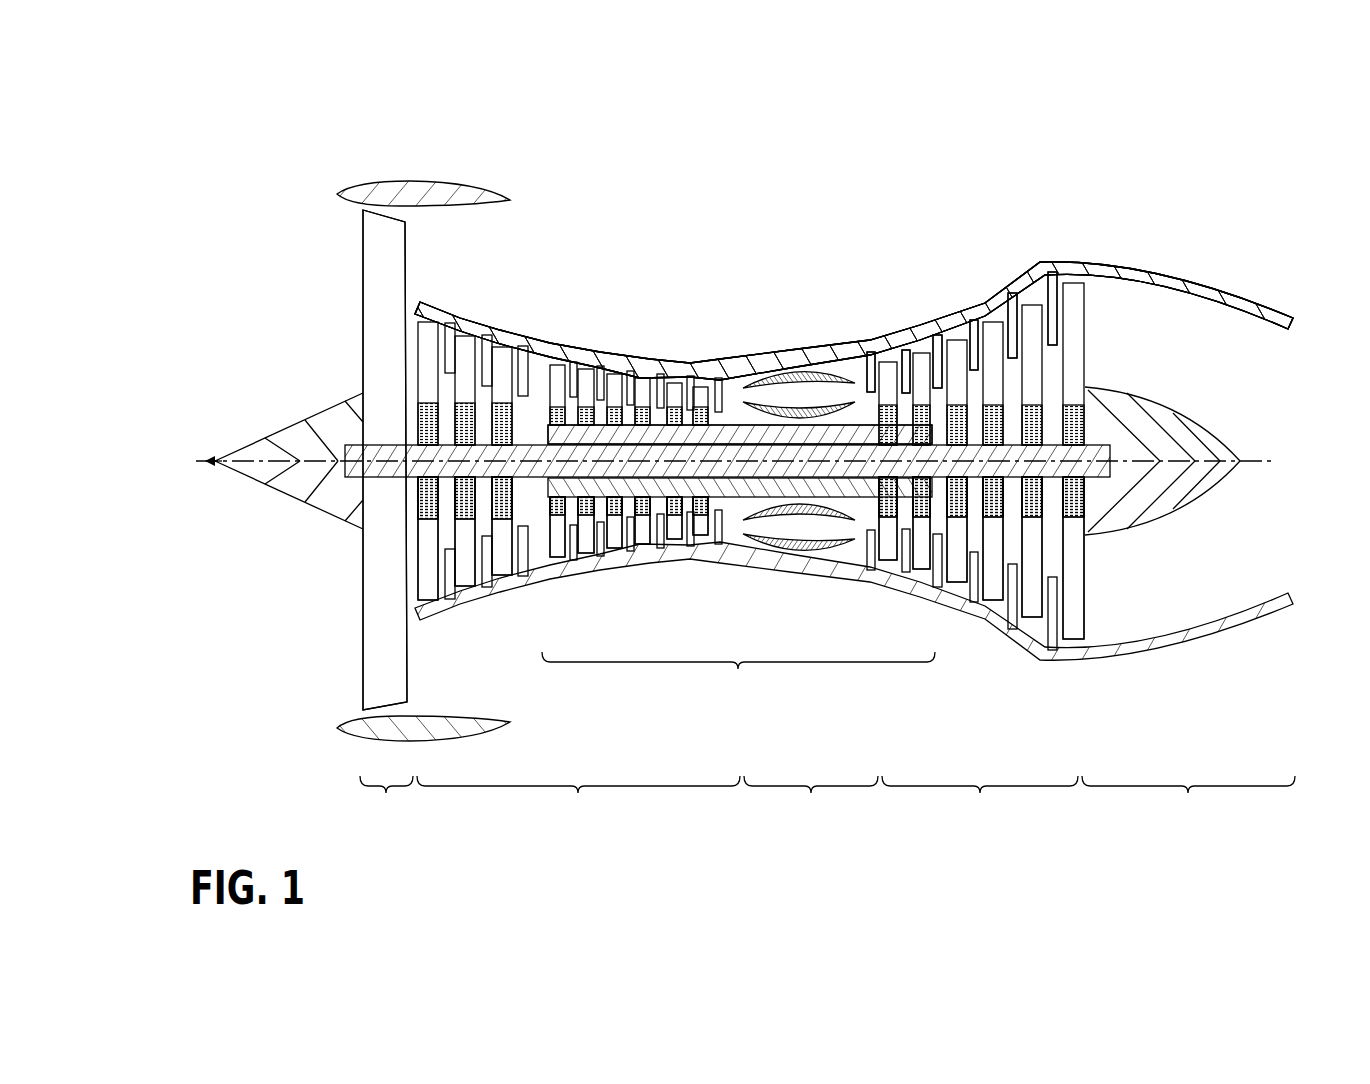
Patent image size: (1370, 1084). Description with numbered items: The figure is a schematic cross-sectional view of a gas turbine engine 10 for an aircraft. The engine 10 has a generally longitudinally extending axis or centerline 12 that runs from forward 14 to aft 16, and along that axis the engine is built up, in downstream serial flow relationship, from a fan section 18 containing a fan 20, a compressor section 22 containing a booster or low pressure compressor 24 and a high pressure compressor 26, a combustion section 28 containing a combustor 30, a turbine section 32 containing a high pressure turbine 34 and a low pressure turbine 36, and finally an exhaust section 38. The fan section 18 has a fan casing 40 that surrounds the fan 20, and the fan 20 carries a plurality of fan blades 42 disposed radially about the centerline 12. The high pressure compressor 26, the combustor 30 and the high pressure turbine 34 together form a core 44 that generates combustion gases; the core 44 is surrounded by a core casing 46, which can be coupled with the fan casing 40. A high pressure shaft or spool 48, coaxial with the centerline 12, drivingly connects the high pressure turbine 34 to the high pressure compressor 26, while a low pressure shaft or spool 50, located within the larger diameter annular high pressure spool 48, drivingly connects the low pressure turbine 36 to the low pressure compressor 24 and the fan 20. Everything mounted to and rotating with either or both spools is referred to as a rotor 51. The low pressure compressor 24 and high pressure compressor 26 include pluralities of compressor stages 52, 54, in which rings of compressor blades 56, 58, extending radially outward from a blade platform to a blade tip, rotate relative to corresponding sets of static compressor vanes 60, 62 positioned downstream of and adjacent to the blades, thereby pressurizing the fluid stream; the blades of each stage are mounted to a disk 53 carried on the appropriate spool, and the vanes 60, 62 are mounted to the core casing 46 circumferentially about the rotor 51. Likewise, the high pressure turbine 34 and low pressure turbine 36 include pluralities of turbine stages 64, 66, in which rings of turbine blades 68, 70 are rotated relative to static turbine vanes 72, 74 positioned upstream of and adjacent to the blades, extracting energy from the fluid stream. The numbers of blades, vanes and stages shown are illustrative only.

The gas turbine engine 10 is at (238, 118).
The centerline 12 is at (272, 455).
The forward direction 14 is at (191, 461).
The aft direction 16 is at (1247, 461).
The fan section 18 is at (386, 797).
The fan 20 is at (354, 268).
The compressor section 22 is at (578, 797).
The low pressure compressor 24 is at (536, 598).
The high pressure compressor 26 is at (682, 568).
The combustion section 28 is at (811, 797).
The combustor 30 is at (852, 370).
The turbine section 32 is at (980, 797).
The high pressure turbine 34 is at (865, 592).
The low pressure turbine 36 is at (976, 630).
The exhaust section 38 is at (1188, 797).
The fan casing 40 is at (425, 184).
The fan blades 42 is at (373, 658).
The core 44 is at (738, 673).
The core casing 46 is at (783, 352).
The high pressure spool 48 is at (738, 420).
The low pressure spool 50 is at (528, 455).
The rotor 51 is at (664, 438).
The compressor stages of the LP compressor 52 is at (415, 293).
The disk 53 is at (995, 403).
The compressor stages of the HP compressor 54 is at (557, 338).
The compressor blades of the LP compressor 56 is at (432, 330).
The compressor blades of the HP compressor 58 is at (585, 370).
The static compressor vanes of the LP compressor 60 is at (457, 372).
The static compressor vanes of the HP compressor 62 is at (572, 375).
The turbine stages of the HP turbine 64 is at (893, 332).
The turbine stages of the LP turbine 66 is at (1011, 276).
The turbine blades of the HP turbine 68 is at (921, 372).
The turbine blades of the LP turbine 70 is at (1033, 320).
The static turbine vanes of the HP turbine 72 is at (906, 352).
The static turbine vanes of the LP turbine 74 is at (1012, 330).